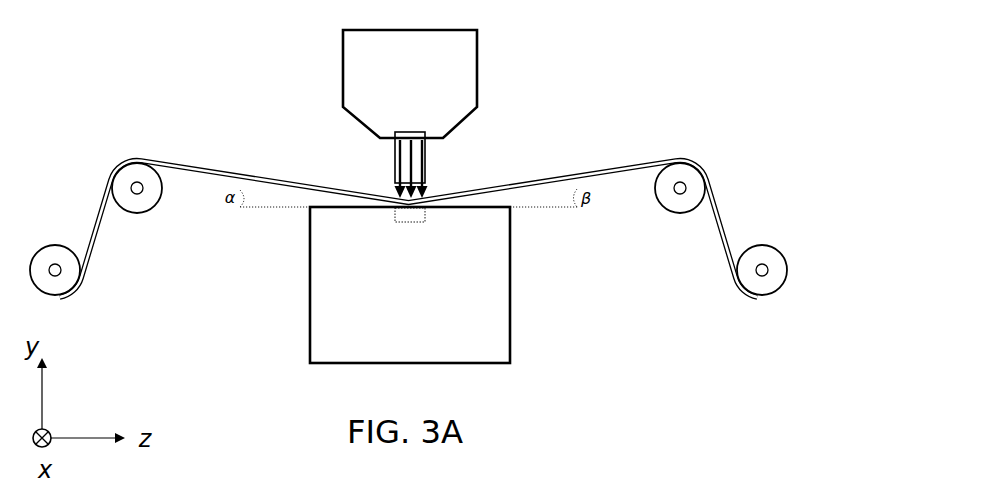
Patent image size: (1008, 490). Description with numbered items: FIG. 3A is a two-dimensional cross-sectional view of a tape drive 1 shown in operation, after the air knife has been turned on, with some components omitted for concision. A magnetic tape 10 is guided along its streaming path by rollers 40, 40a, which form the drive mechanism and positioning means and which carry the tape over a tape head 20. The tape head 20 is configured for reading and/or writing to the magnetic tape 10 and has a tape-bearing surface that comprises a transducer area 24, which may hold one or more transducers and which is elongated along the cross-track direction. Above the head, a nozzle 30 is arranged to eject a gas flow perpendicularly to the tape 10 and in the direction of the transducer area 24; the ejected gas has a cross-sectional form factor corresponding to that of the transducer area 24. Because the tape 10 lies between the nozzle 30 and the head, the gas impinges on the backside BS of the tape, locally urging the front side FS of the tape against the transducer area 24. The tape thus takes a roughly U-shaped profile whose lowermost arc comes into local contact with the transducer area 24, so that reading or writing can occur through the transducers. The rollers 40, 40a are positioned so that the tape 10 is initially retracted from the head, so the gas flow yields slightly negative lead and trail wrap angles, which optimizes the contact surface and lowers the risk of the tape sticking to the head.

The tape drive 1 is at (590, 378).
The magnetic tape 10 is at (257, 184).
The tape head 20 is at (512, 293).
The transducer area 24 is at (447, 198).
The nozzle 30 is at (470, 58).
The rollers 40 is at (139, 214).
The rollers 40a is at (46, 246).
The backside of the tape BS is at (305, 176).
The front side of the tape FS is at (214, 191).